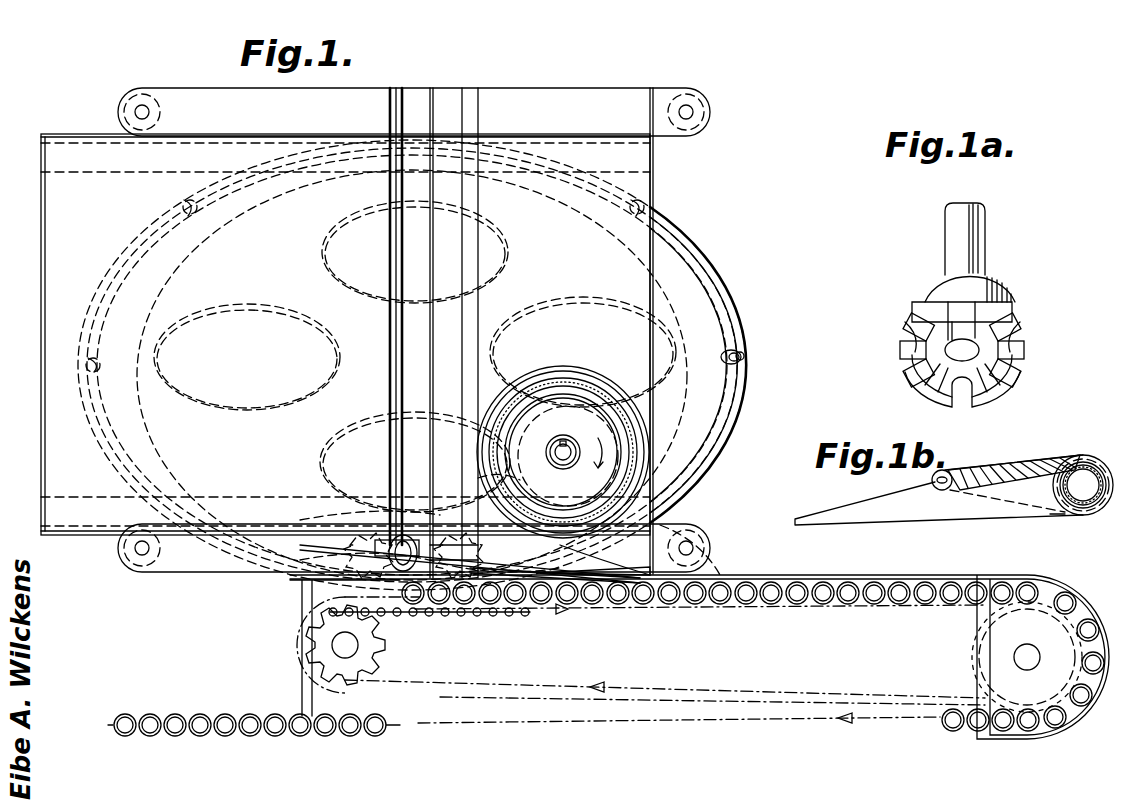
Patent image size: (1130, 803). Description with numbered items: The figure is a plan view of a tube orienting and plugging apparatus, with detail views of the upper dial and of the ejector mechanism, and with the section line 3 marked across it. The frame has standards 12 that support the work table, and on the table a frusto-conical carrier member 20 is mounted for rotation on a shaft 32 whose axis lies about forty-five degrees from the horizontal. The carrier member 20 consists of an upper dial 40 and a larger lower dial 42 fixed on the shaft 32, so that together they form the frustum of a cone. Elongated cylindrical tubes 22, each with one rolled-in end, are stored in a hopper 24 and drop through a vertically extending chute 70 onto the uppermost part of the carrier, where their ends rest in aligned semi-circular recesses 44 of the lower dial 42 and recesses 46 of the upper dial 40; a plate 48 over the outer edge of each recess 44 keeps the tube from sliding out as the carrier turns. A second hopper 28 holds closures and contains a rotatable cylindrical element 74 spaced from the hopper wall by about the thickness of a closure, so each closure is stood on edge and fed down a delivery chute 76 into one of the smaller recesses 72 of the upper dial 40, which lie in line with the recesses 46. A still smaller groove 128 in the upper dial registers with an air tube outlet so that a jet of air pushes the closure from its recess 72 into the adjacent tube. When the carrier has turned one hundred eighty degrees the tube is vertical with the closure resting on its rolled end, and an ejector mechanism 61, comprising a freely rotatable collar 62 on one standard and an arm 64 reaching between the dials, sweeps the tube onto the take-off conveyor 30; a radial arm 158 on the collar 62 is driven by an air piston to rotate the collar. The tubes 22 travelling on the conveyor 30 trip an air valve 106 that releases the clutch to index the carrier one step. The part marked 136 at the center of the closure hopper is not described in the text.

In FIG. 1, the section line 3- 3 is at (437, 57).
In FIG. 1B, the standards 12 is at (1084, 469).
In FIG. 1, the frusto-conical carrier member 20 is at (722, 256).
In FIG. 1, the elongated cylindrical tubes 22 is at (432, 618).
In FIG. 1, the hopper 24 is at (82, 226).
In FIG. 1, the hopper 28 is at (648, 438).
In FIG. 1, the take-off conveyor 30 is at (820, 580).
In FIG. 1, the shaft 32 is at (404, 390).
In FIG. 1A, the shaft 32 is at (986, 238).
In FIG. 1, the upper dial 40 is at (292, 580).
In FIG. 1A, the upper dial 40 is at (1015, 283).
In FIG. 1, the lower dial 42 is at (102, 448).
In FIG. 1, the semi-circular recesses 44 is at (187, 205).
In FIG. 1, the semi-circular recesses 46 is at (375, 516).
In FIG. 1A, the semi-circular recesses 46 is at (962, 312).
In FIG. 1, the plate 48 is at (738, 352).
In FIG. 1, the ejector mechanism 61 is at (587, 595).
In FIG. 1B, the ejector mechanism 61 is at (1040, 528).
In FIG. 1B, the rotatable collar 62 is at (1062, 518).
In FIG. 1B, the ejector arm 64 is at (968, 523).
In FIG. 1, the chute 70 is at (410, 327).
In FIG. 1A, the recesses 72 is at (908, 336).
In FIG. 1, the rotatable cylindrical element 74 is at (626, 418).
In FIG. 1, the delivery chute 76 is at (500, 478).
In FIG. 1, the air valve 106 is at (668, 528).
In FIG. 1A, the semicircular recess or groove 128 is at (1030, 380).
In FIG. 1, the hub 136 is at (565, 470).
In FIG. 1B, the arm 158 is at (975, 468).